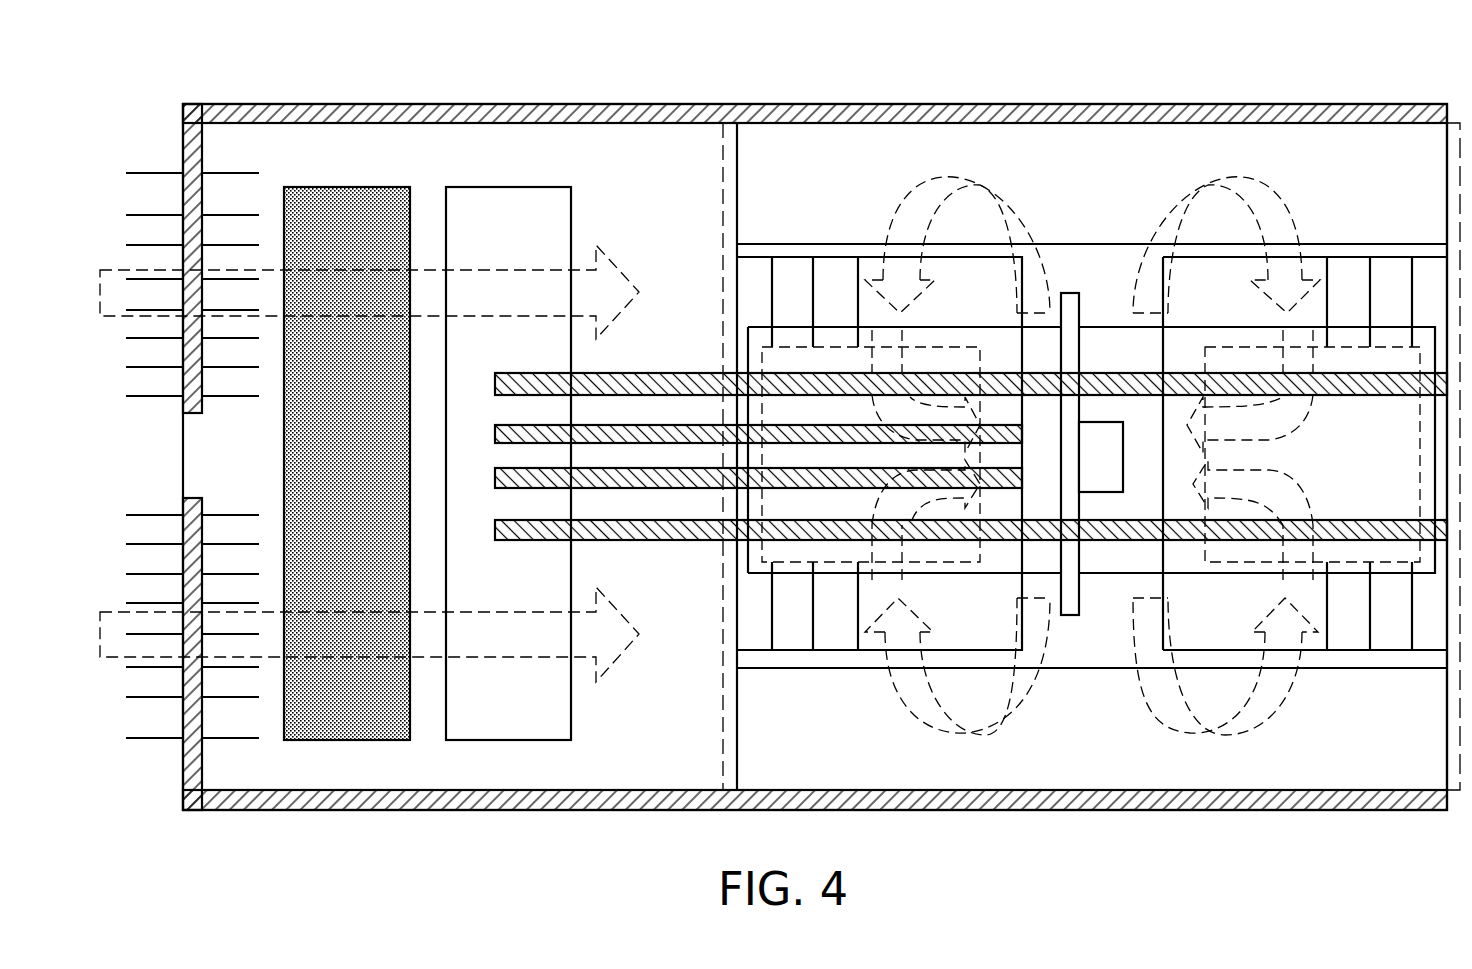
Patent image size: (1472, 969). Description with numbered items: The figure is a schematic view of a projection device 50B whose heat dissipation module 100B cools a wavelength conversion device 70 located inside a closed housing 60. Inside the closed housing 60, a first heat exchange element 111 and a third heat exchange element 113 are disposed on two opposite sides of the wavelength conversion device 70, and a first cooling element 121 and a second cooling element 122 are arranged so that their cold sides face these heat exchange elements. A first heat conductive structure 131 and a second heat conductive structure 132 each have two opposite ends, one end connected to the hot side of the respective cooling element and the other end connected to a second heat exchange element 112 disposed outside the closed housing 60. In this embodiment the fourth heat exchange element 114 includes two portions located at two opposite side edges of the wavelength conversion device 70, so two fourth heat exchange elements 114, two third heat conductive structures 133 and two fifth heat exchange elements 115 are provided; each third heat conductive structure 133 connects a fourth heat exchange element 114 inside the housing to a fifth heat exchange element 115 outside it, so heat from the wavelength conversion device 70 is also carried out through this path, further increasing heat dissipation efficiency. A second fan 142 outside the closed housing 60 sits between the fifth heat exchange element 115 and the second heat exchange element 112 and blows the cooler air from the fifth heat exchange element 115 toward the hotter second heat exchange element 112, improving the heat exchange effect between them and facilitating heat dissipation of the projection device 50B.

The heat dissipation module 100B is at (173, 83).
The third heat conductive structure 133 is at (402, 118).
The fifth heat exchange element 115 is at (157, 173).
The second fan 142 is at (353, 195).
The second heat exchange element 112 is at (509, 195).
The second heat conductive structure 132 is at (660, 527).
The first heat conductive structure 131 is at (702, 433).
The first cooling element 121 is at (795, 358).
The first heat exchange element 111 is at (832, 273).
The fourth heat exchange element 114 is at (1096, 133).
The second cooling element 122 is at (1353, 358).
The third heat exchange element 113 is at (1391, 273).
The closed housing 60 is at (1458, 123).
The projection device 50B is at (1471, 862).
The wavelength conversion device 70 is at (1101, 440).